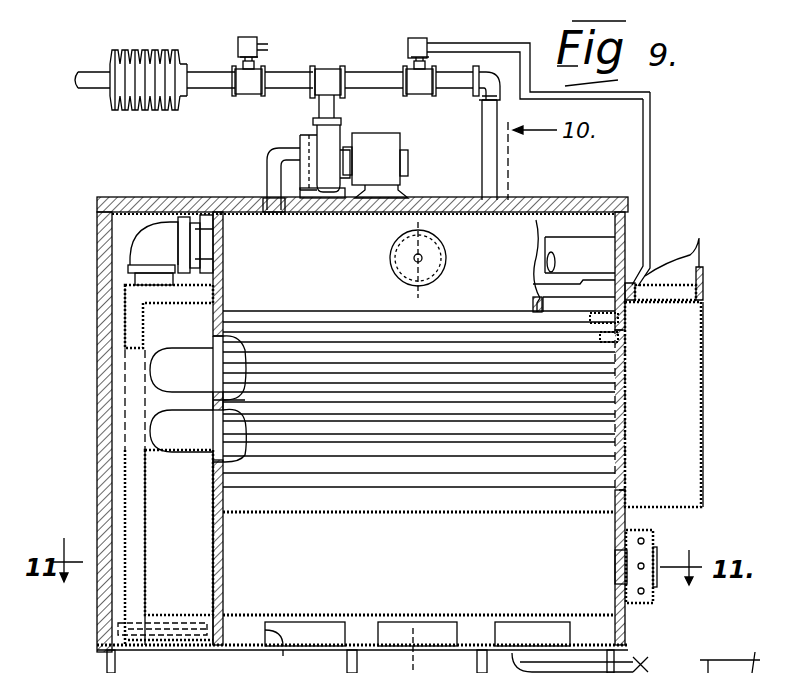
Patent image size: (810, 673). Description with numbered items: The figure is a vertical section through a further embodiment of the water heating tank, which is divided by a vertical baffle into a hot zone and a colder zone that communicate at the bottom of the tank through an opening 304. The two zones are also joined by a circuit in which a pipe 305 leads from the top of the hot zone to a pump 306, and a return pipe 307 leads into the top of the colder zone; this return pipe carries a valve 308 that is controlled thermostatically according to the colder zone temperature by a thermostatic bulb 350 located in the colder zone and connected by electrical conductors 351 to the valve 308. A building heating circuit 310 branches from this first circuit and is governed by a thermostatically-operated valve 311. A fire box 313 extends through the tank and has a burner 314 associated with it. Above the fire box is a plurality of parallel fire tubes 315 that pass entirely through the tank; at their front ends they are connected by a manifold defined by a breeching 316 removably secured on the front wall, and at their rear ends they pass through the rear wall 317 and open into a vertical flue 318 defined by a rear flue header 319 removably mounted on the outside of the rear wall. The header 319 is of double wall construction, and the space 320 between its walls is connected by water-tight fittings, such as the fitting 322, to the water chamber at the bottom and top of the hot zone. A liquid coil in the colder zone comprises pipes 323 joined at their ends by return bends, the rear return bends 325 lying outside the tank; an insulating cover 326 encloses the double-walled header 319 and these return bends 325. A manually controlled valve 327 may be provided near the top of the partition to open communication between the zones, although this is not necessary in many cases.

The opening 304 is at (281, 661).
The pipe 305 is at (267, 183).
The pump 306 is at (308, 135).
The return pipe 307 is at (498, 160).
The valve 308 is at (418, 89).
The building heating circuit 310 is at (212, 82).
The thermostatically-operated valve 311 is at (255, 80).
The fire box 313 is at (419, 563).
The burner 314 is at (650, 536).
The fire tubes or flues 315 is at (522, 480).
The breeching 316 is at (703, 447).
The rear wall 317 is at (213, 498).
The vertical flue or manifold 318 is at (163, 580).
The rear flue header or manifold member 319 is at (128, 480).
The space 320 is at (135, 497).
The water-tight fitting 322 is at (132, 262).
The pipes 323 is at (570, 252).
The return bends 325 is at (162, 440).
The insulating cover 326 is at (148, 247).
The manually controlled valve 327 is at (446, 258).
The thermostatic bulb 350 is at (534, 289).
The electrical conductors 351 is at (652, 182).